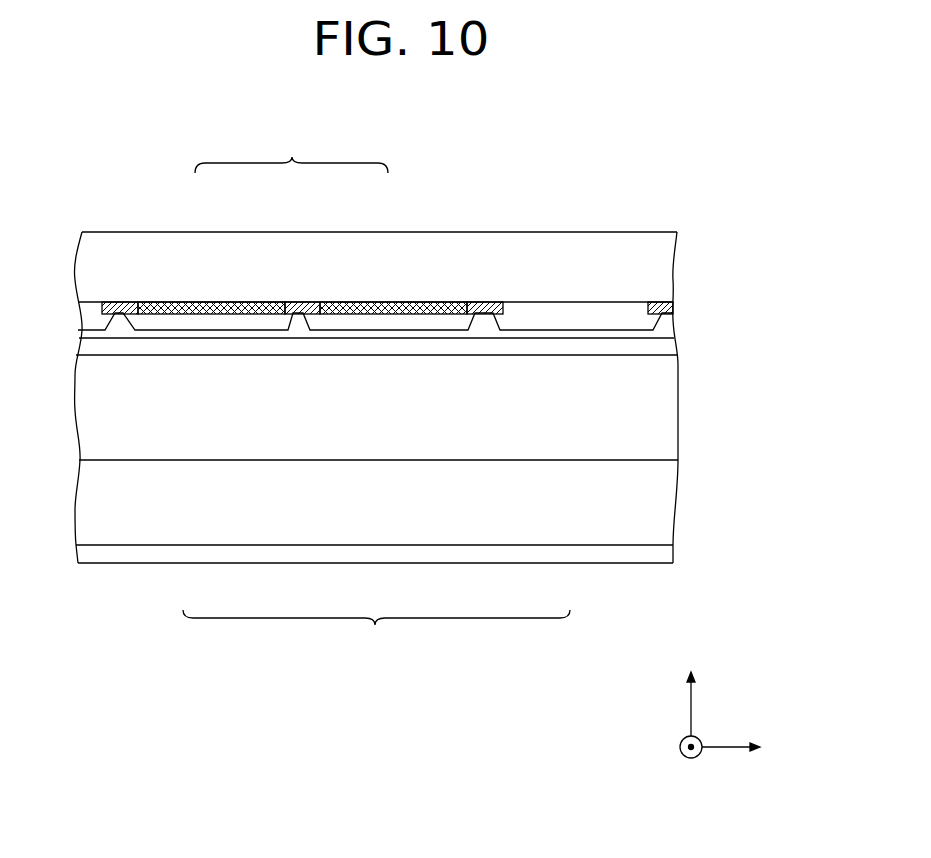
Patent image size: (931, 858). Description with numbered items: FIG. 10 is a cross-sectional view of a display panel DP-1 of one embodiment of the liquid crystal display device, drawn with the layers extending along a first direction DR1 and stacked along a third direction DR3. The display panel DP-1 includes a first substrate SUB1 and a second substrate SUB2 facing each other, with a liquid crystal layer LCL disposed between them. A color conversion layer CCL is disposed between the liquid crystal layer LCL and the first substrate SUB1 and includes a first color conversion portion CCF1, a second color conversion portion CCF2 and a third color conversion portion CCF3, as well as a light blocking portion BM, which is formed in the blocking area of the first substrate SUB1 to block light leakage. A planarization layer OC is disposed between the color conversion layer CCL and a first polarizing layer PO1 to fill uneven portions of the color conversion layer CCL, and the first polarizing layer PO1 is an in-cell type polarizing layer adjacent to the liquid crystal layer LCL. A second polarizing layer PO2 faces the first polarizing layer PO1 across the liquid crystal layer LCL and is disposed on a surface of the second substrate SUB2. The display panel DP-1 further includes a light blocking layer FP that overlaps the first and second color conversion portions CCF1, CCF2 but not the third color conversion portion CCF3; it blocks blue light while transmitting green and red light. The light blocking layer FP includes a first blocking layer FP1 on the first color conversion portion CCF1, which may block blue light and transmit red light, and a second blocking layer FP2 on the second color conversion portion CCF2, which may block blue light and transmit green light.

The display panel DP-1 is at (703, 164).
The light blocking layer FP is at (291, 151).
The first blocking layer FP1 is at (203, 301).
The second blocking layer FP2 is at (352, 301).
The first substrate SUB1 is at (667, 273).
The light blocking portion BM is at (297, 320).
The planarization layer OC is at (667, 335).
The first polarizing layer PO1 is at (667, 357).
The liquid crystal layer LCL is at (667, 422).
The second substrate SUB2 is at (667, 508).
The second polarizing layer PO2 is at (667, 555).
The first color conversion portion CCF1 is at (205, 320).
The second color conversion portion CCF2 is at (400, 320).
The third color conversion portion CCF3 is at (545, 322).
The color conversion layer CCL is at (376, 632).
The first direction DR1 is at (744, 748).
The third direction DR3 is at (694, 691).